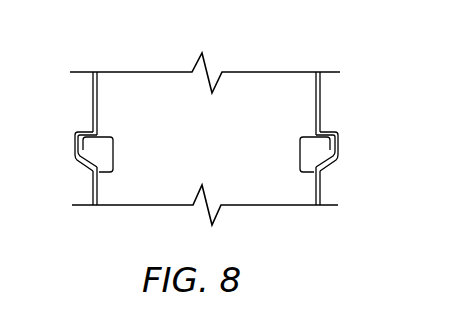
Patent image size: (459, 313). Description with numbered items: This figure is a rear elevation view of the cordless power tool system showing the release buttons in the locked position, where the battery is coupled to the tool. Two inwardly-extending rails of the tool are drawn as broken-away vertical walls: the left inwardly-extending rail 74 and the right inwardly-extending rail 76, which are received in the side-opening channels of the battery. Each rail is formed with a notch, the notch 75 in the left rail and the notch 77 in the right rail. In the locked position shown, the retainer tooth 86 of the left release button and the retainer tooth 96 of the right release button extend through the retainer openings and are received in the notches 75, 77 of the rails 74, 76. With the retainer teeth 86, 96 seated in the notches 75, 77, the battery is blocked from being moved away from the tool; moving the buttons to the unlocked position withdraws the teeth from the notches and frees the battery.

The left inwardly-extending rail 74 is at (315, 105).
The notch 75 is at (323, 158).
The right inwardly-extending rail 76 is at (102, 103).
The notch 77 is at (96, 157).
The retainer tooth 86 is at (299, 145).
The retainer tooth 96 is at (114, 145).